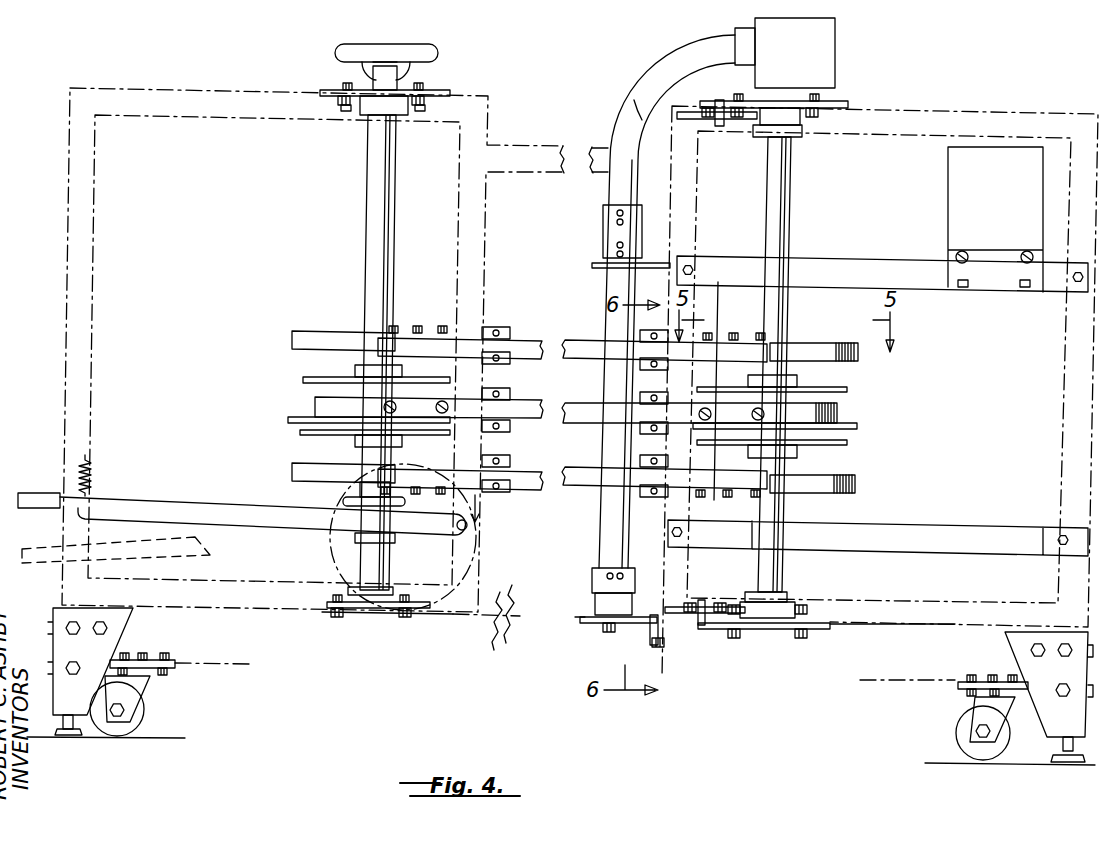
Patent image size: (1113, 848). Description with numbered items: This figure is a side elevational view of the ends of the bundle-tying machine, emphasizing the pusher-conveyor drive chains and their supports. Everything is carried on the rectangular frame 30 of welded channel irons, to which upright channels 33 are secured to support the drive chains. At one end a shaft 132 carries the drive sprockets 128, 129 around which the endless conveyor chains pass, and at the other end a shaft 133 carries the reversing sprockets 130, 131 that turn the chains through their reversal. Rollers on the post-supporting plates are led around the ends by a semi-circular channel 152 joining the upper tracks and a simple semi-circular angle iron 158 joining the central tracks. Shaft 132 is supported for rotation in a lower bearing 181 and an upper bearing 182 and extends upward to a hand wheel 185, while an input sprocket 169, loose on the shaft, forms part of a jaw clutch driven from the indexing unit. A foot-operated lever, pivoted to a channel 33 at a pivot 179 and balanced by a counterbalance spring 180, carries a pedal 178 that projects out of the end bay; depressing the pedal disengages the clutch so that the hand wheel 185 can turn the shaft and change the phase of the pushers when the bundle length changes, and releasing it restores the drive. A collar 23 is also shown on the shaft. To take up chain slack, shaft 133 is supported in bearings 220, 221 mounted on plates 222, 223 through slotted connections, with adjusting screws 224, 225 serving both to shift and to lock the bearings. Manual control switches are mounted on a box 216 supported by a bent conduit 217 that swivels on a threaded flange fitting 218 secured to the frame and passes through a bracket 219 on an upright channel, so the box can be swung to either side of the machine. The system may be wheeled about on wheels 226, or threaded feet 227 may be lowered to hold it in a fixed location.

The cam collar 23 is at (340, 502).
The rectangular frame 30 is at (848, 625).
The upright channels 33 is at (698, 200).
The drive sprocket 128 is at (303, 379).
The drive sprocket 129 is at (300, 432).
The reversing sprocket 130 is at (847, 389).
The reversing sprocket 131 is at (847, 442).
The shaft 132 is at (368, 208).
The shaft 133 is at (792, 212).
The semi-circular channel 152 is at (303, 332).
The semi-circular angle iron 158 is at (315, 405).
The input sprocket 169 is at (475, 506).
The pedal 178 is at (36, 493).
The pivot 179 is at (470, 530).
The counterbalance spring 180 is at (90, 472).
The lower bearing 181 is at (360, 606).
The upper bearing 182 is at (360, 112).
The hand wheel 185 is at (340, 52).
The box 216 is at (836, 48).
The bent conduit 217 is at (610, 190).
The threaded flange fitting 218 is at (592, 605).
The bracket 219 is at (602, 268).
The bearing 220 is at (800, 130).
The bearing 221 is at (790, 605).
The plate 222 is at (848, 104).
The plate 223 is at (812, 634).
The adjusting screw 224 is at (690, 112).
The adjusting screw 225 is at (680, 618).
The wheels 226 is at (140, 720).
The threaded feet 227 is at (58, 740).